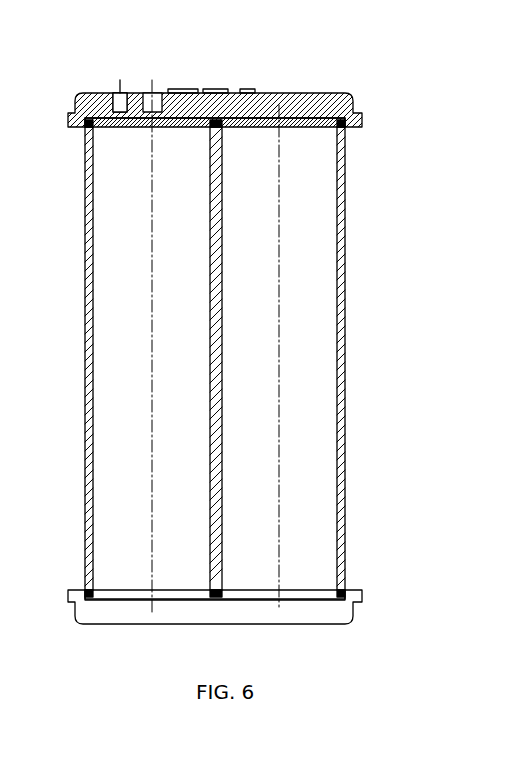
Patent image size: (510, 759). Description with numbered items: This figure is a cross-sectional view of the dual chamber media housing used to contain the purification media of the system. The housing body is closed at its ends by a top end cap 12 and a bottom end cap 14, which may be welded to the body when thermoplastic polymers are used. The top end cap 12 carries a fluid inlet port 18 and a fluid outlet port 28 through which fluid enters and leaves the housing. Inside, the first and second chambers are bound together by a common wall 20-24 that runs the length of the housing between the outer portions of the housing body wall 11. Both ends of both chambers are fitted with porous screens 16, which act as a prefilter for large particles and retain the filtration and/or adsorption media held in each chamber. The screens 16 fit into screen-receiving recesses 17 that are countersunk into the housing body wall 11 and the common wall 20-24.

The housing body wall 11 is at (340, 338).
The top end cap 12 is at (348, 95).
The bottom end cap 14 is at (352, 625).
The porous screens 16 is at (145, 128).
The screen-receiving recesses 17 is at (87, 130).
The fluid inlet port 18 is at (152, 112).
The common wall 20-24 is at (219, 300).
The fluid outlet port 28 is at (218, 93).